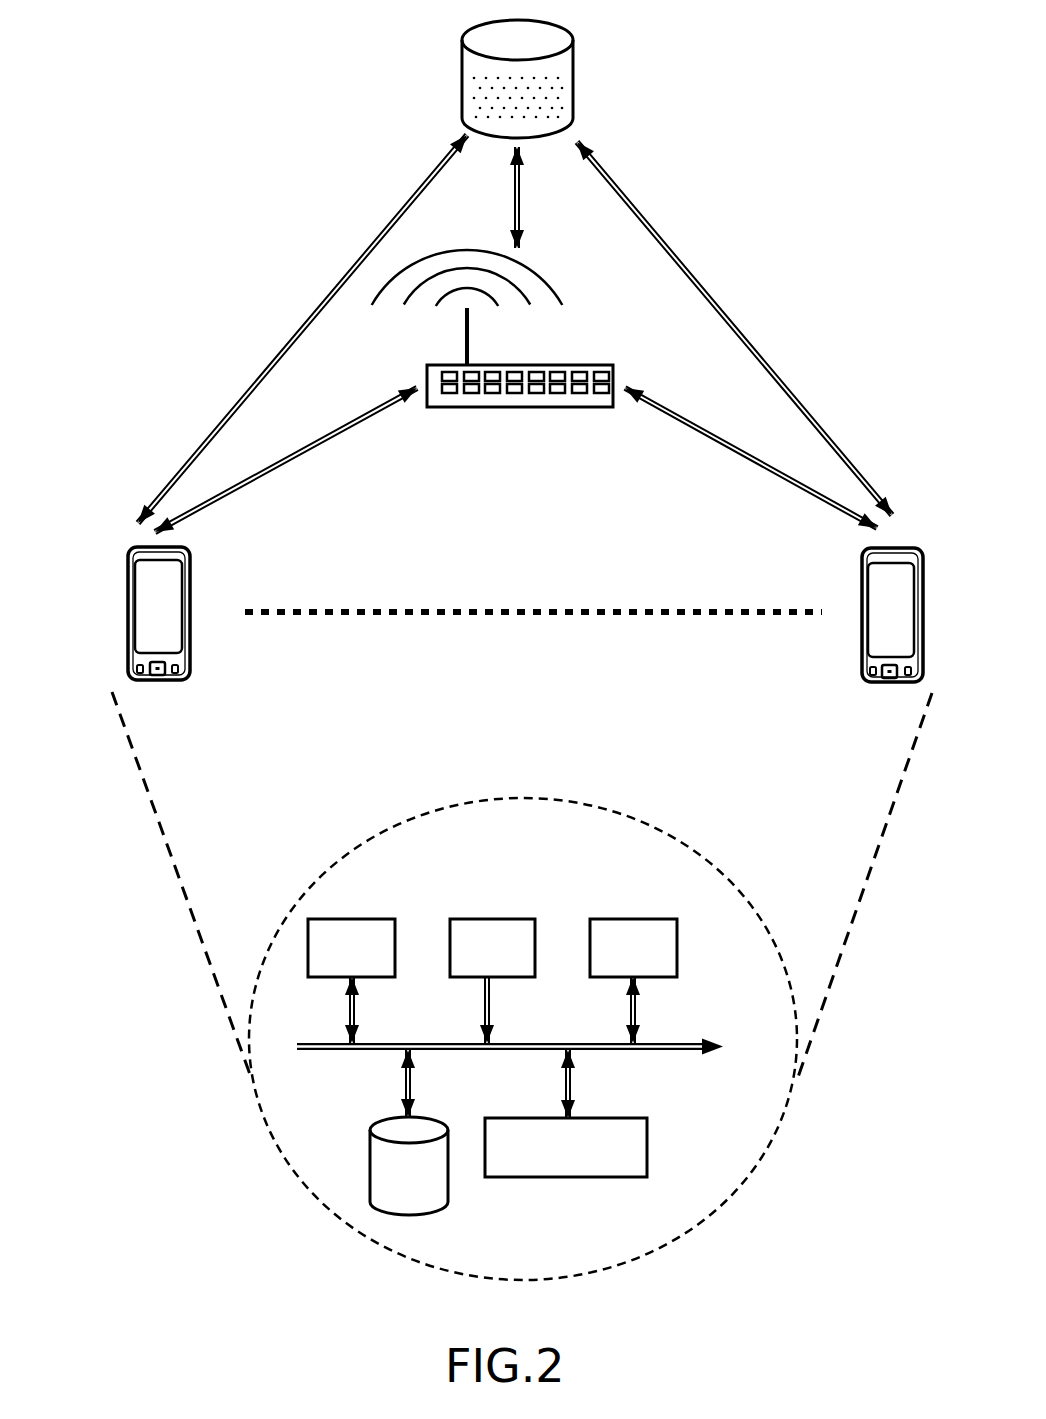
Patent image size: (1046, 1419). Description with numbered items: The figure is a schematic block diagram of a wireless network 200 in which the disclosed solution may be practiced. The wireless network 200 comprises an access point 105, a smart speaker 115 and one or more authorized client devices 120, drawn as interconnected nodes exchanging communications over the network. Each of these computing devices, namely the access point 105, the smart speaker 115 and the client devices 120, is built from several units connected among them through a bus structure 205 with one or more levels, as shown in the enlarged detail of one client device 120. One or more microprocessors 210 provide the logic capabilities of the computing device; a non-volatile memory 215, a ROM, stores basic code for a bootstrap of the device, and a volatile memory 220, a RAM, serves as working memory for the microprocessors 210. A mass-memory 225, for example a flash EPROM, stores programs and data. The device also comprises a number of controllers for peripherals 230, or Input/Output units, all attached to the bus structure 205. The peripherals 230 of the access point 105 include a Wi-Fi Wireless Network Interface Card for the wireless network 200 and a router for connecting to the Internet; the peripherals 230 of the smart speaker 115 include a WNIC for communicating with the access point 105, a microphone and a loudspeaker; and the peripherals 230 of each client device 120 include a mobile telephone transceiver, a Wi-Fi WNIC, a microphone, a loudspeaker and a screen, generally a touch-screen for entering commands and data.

The wireless network 200 is at (170, 101).
The smart speaker 115 is at (463, 90).
The access point 105 is at (485, 407).
The client device 120 is at (190, 585).
The bus structure 205 is at (685, 1047).
The microprocessor 210 is at (365, 919).
The non-volatile memory 215 is at (480, 919).
The volatile memory 220 is at (630, 919).
The mass-memory 225 is at (378, 1118).
The peripherals 230 is at (587, 1177).